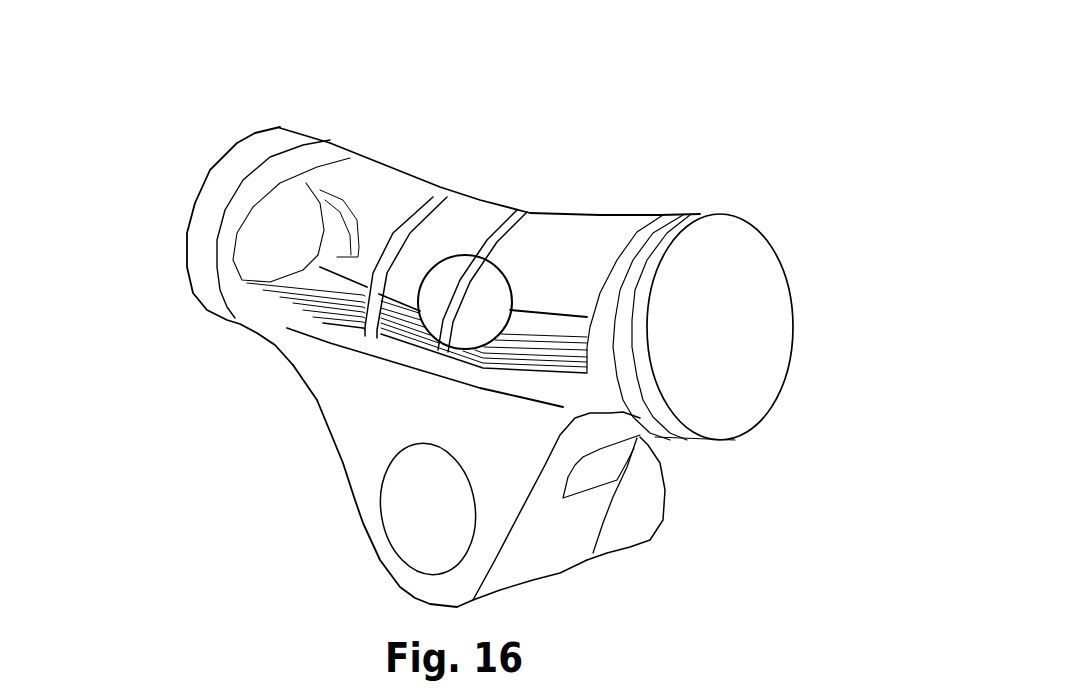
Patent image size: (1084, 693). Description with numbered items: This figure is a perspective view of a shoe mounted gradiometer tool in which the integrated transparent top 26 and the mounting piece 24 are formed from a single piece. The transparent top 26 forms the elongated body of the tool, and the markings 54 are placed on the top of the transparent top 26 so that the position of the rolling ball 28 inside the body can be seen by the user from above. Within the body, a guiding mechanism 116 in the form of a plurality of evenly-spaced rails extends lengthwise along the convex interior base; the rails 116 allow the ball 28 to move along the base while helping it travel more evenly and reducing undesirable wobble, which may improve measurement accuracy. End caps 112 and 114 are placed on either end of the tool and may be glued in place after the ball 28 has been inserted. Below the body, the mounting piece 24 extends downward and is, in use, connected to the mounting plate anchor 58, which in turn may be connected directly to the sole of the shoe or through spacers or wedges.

The end cap 114 is at (200, 183).
The guiding mechanism 116 is at (330, 270).
The markings 54 is at (432, 190).
The transparent top 26 is at (473, 202).
The rolling ball 28 is at (503, 263).
The end cap 112 is at (723, 333).
The mounting piece 24 is at (540, 535).
The mounting plate anchor 58 is at (660, 495).